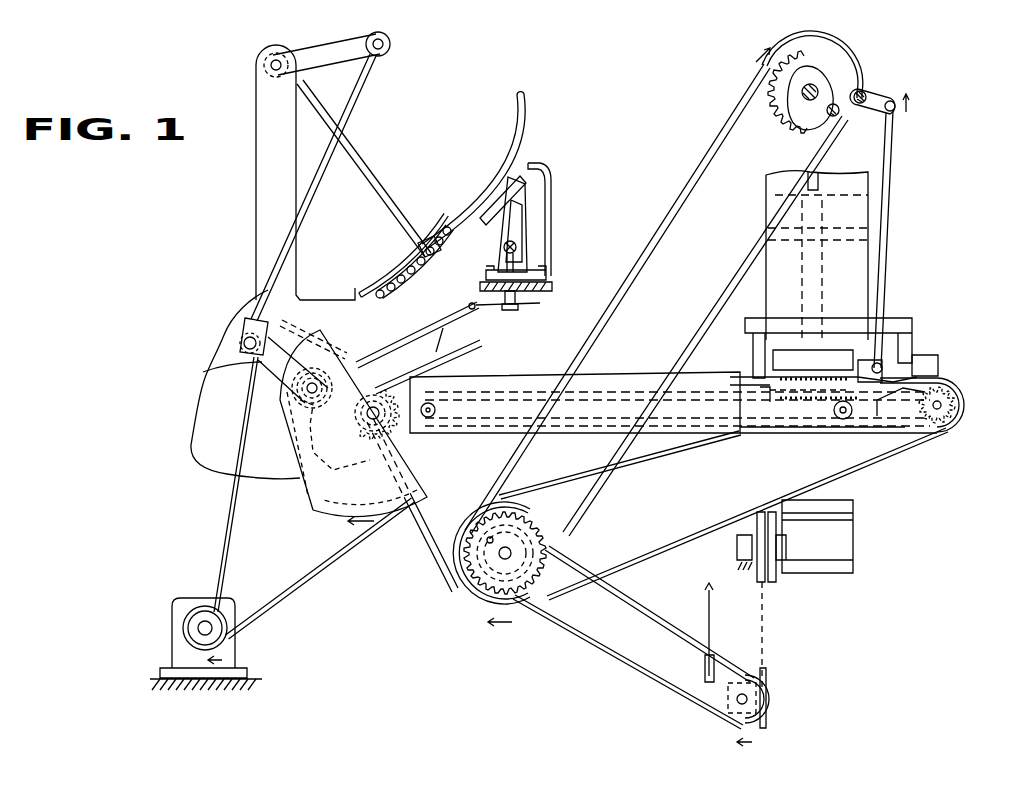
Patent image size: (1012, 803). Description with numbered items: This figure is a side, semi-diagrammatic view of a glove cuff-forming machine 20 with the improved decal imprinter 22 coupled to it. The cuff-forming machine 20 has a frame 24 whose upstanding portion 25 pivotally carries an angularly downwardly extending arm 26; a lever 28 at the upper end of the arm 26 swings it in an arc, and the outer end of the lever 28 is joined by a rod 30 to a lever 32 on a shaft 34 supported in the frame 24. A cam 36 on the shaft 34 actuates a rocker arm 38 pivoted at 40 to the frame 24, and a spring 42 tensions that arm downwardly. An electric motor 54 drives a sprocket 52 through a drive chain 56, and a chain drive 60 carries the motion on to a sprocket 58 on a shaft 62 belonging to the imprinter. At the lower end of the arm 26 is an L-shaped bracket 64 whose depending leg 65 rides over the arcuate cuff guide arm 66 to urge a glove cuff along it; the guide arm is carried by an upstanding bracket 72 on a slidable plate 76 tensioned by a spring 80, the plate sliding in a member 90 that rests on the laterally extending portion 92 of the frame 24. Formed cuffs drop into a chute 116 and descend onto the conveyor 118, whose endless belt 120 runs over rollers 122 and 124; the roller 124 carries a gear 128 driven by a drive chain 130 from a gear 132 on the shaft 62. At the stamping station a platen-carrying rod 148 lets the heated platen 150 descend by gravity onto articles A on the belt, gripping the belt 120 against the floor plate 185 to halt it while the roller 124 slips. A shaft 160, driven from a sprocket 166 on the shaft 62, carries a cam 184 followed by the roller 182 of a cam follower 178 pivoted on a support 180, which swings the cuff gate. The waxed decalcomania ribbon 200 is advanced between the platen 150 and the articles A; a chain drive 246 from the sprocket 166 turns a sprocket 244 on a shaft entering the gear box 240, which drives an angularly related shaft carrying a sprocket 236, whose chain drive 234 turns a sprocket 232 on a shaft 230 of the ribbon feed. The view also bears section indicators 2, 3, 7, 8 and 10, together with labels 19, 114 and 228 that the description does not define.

The section line 2- 2 is at (971, 384).
The section line 3- 3 is at (971, 434).
The chain 7 is at (434, 212).
The section line 8- 8 is at (531, 158).
The guide strip 10 is at (466, 210).
The pivot pin 19 is at (246, 340).
The cuff-forming machine 20 is at (226, 247).
The decal imprinter 22 is at (949, 217).
The frame 24 is at (215, 459).
The upstanding portion 25 is at (266, 183).
The arm 26 is at (347, 157).
The lever 28 is at (320, 50).
The rod 30 is at (303, 196).
The lever 32 is at (207, 371).
The shaft 34 is at (292, 404).
The cam 36 is at (318, 442).
The rocker arm 38 is at (448, 333).
The pivot 40 is at (474, 310).
The spring 42 is at (446, 334).
The chain sprocket 52 is at (332, 503).
The electric motor 54 is at (240, 652).
The drive chain 56 is at (343, 587).
The sprocket 58 is at (488, 541).
The chain drive 60 is at (428, 527).
The shaft 62 is at (503, 557).
The L-shaped bracket 64 is at (423, 236).
The depending leg 65 is at (441, 205).
The cuff guide arm 66 is at (504, 140).
The upstanding bracket 72 is at (522, 232).
The slidable plate 76 is at (540, 289).
The spring 80 is at (517, 250).
The member 90 is at (540, 276).
The laterally extending portion 92 is at (520, 298).
The post 114 is at (552, 183).
The chute 116 is at (305, 313).
The conveyor 118 is at (568, 378).
The endless belt 120 is at (667, 388).
The roller 122 is at (437, 410).
The roller 124 is at (935, 431).
The gear 128 is at (922, 441).
The drive chain 130 is at (891, 452).
The gear 132 is at (553, 547).
The platen-carrying rod 148 is at (766, 284).
The platen 150 is at (813, 359).
The shaft 160 is at (808, 84).
The sprocket 166 is at (492, 516).
The cam follower 178 is at (888, 100).
The support 180 is at (864, 91).
The roller 182 is at (835, 118).
The cam 184 is at (817, 84).
The floor plate 185 is at (820, 409).
The decalcomania ribbon 200 is at (778, 382).
The articles A is at (756, 389).
The motor 228 is at (775, 580).
The shaft 230 is at (737, 549).
The sprocket 232 is at (758, 584).
The chain drive 234 is at (768, 662).
The sprocket 236 is at (768, 680).
The gear box 240 is at (734, 724).
The sprocket 244 is at (718, 676).
The chain drive 246 is at (668, 681).